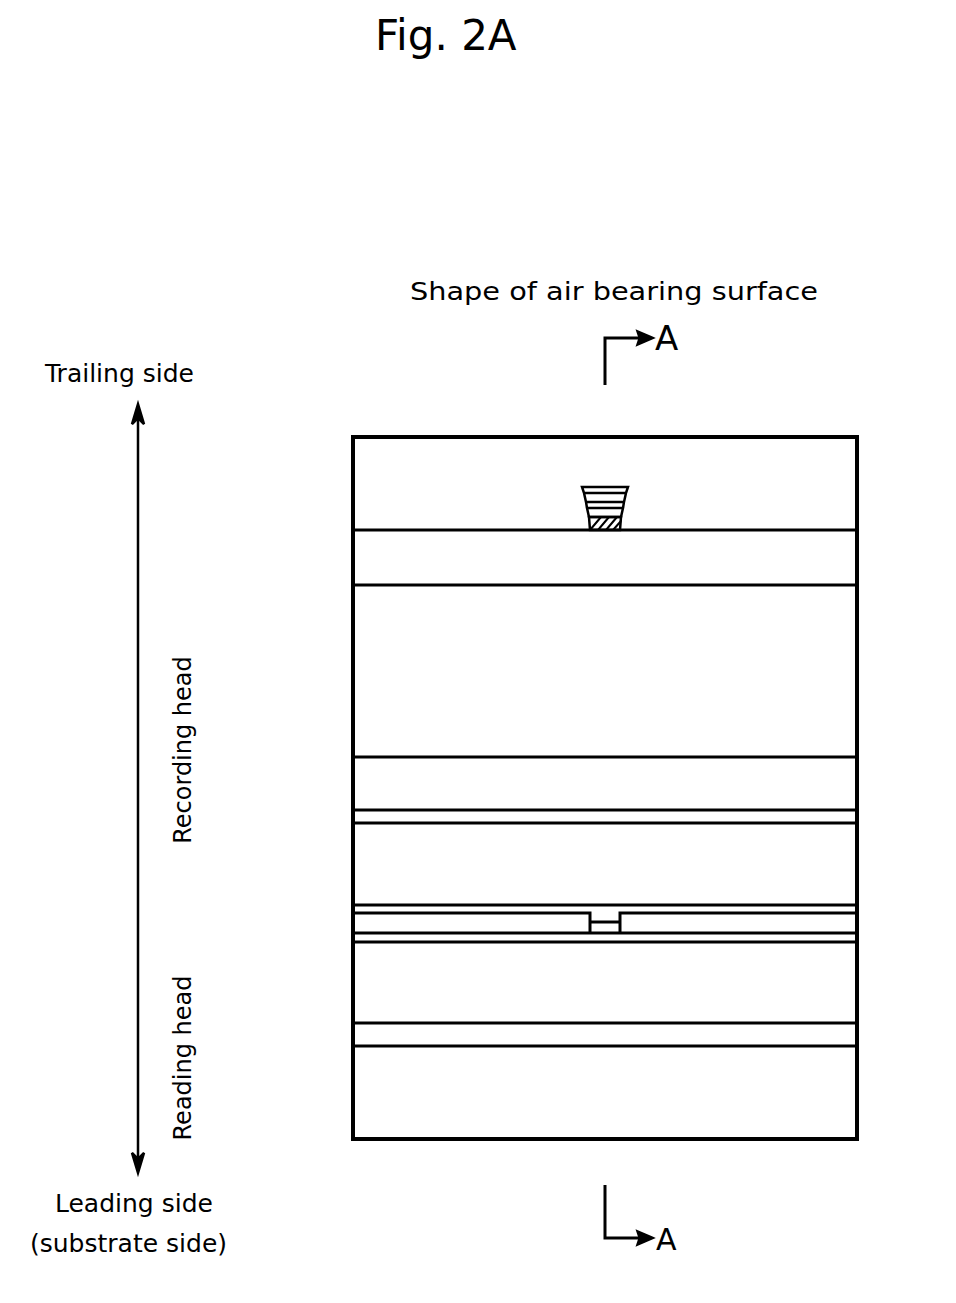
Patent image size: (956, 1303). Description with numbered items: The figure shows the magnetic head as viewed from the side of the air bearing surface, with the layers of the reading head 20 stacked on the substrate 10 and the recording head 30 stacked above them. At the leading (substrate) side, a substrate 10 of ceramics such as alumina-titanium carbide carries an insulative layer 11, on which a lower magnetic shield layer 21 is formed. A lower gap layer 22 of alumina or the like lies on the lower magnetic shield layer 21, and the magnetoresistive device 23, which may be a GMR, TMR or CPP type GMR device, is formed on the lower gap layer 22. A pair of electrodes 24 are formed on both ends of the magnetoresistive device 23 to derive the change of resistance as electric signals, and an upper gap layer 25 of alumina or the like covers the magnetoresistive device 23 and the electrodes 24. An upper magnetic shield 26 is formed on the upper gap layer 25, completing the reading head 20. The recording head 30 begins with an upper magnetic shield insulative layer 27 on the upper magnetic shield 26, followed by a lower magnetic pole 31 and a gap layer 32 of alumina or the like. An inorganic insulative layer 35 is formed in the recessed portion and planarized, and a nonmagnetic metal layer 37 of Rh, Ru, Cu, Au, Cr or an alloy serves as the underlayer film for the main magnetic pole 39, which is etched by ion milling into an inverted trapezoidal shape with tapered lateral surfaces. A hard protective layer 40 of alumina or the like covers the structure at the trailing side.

The substrate 10 is at (355, 1095).
The insulative layer 11 is at (355, 1035).
The reading head 20 is at (247, 1140).
The lower magnetic shield layer 21 is at (355, 985).
The lower gap layer 22 is at (452, 945).
The magnetoresistive device 23 is at (606, 945).
The electrodes 24 is at (355, 928).
The upper gap layer 25 is at (596, 912).
The upper magnetic shield 26 is at (355, 877).
The upper magnetic shield insulative layer 27 is at (355, 820).
The recording head 30 is at (247, 440).
The lower magnetic pole 31 is at (355, 776).
The gap layer 32 is at (355, 675).
The inorganic insulative layer 35 is at (355, 565).
The nonmagnetic metal layer 37 is at (622, 525).
The main magnetic pole 39 is at (582, 488).
The hard protective layer 40 is at (355, 489).